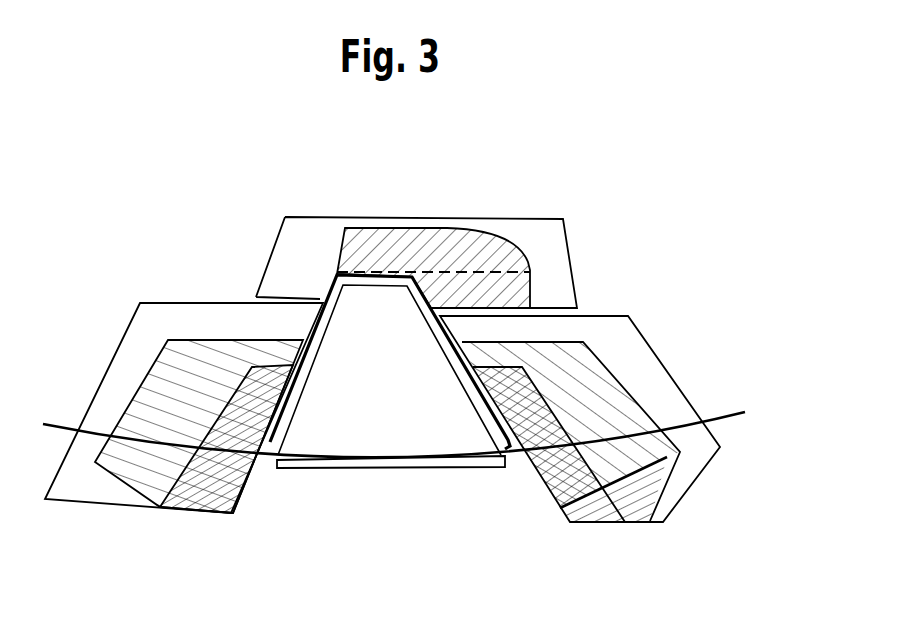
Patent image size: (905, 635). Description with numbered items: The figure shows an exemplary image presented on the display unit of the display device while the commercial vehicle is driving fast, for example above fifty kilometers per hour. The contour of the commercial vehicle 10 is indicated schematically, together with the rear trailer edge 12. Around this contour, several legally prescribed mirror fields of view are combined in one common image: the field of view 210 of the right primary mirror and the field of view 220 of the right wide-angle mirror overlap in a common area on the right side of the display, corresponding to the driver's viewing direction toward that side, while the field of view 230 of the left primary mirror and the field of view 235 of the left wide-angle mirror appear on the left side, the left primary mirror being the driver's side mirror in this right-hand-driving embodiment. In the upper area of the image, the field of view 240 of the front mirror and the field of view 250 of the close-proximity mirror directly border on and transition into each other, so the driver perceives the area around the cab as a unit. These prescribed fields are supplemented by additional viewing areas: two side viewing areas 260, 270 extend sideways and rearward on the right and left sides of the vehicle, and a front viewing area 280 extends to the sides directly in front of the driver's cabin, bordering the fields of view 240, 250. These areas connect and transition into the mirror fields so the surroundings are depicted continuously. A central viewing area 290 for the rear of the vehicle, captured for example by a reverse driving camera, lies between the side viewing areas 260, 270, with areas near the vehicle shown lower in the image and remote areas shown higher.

The contour of the commercial vehicle 10 is at (512, 452).
The rear trailer edge 12 is at (745, 412).
The field of view of a right primary mirror 210 is at (612, 507).
The field of view of a right wide-angle mirror 220 is at (663, 457).
The field of view of a left primary mirror 230 is at (203, 503).
The field of view of a left wide-angle mirror 235 is at (143, 467).
The field of view of a front mirror 240 is at (383, 240).
The field of view of a close-proximity mirror 250 is at (530, 286).
The side viewing area 260 is at (640, 358).
The side viewing area 270 is at (132, 340).
The front viewing area 280 is at (558, 233).
The viewing area for the rear area 290 is at (362, 428).